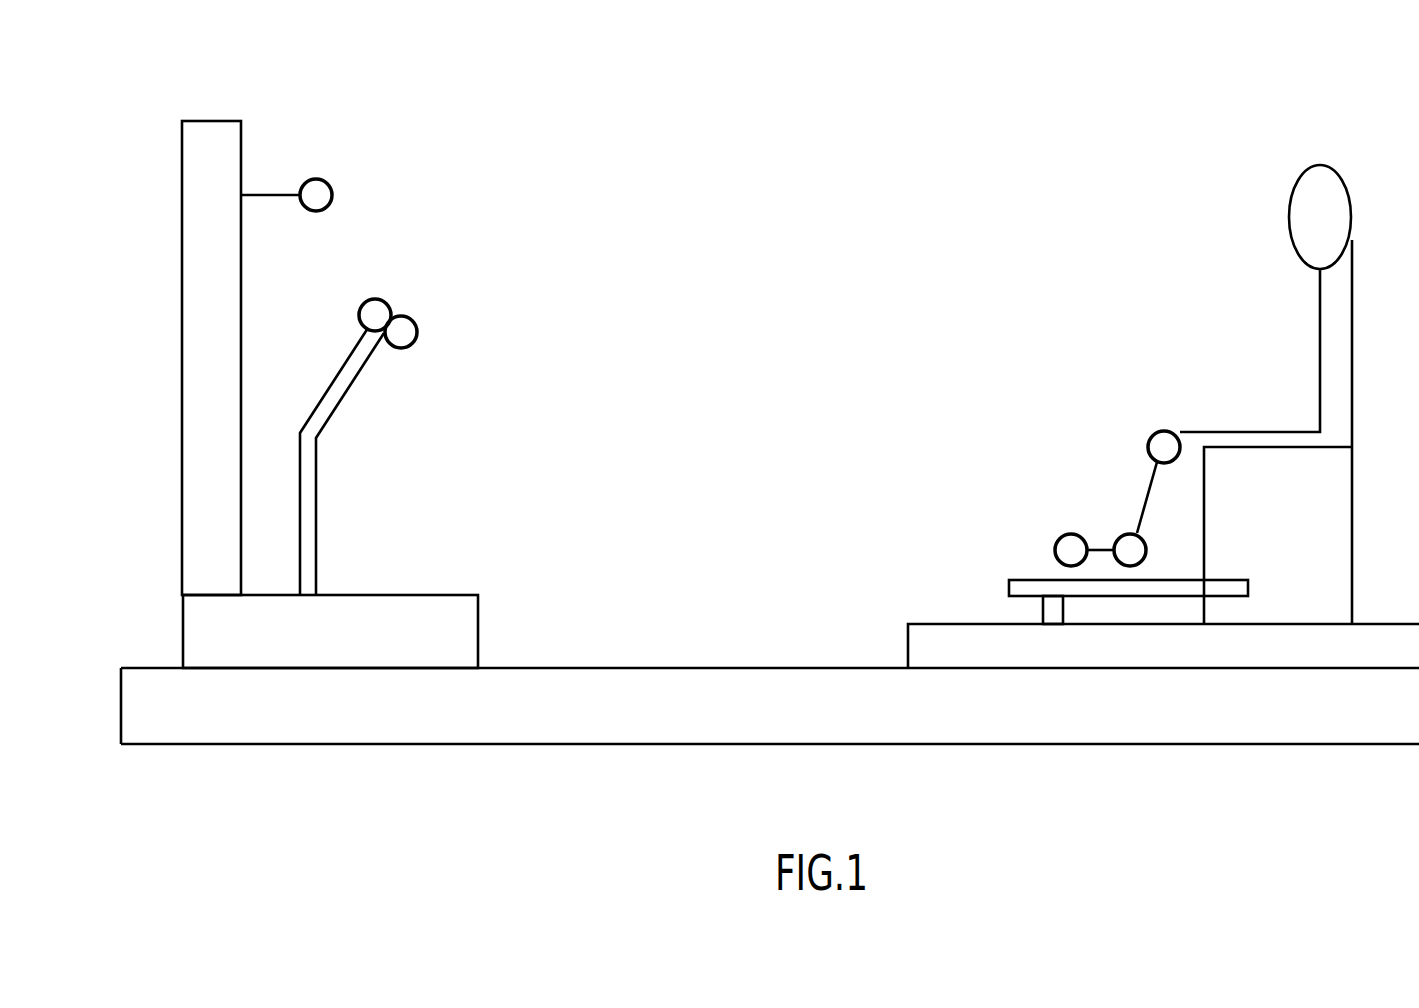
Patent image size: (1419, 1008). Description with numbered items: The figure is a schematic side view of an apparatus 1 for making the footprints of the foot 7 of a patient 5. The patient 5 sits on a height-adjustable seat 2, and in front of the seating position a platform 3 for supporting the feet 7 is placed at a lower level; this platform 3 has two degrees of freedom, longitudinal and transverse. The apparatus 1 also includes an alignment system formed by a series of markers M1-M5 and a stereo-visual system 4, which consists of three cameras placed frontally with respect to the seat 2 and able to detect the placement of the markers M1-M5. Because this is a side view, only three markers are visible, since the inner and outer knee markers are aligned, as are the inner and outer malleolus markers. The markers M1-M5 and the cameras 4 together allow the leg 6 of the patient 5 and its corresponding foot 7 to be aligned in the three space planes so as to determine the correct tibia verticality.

The apparatus 1 is at (1050, 78).
The height-adjustable seat 2 is at (1341, 468).
The platform 3 is at (1035, 623).
The stereo-visual system 4 is at (363, 196).
The patient 5 is at (1349, 337).
The leg 6 is at (1176, 509).
The foot 7 is at (1101, 579).
The markers M1-M5 is at (1120, 505).